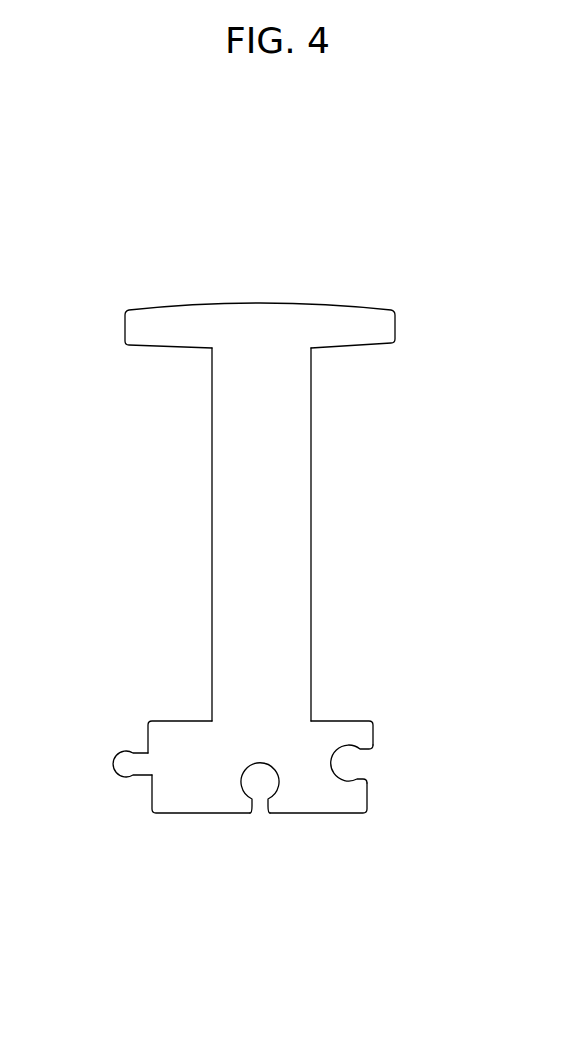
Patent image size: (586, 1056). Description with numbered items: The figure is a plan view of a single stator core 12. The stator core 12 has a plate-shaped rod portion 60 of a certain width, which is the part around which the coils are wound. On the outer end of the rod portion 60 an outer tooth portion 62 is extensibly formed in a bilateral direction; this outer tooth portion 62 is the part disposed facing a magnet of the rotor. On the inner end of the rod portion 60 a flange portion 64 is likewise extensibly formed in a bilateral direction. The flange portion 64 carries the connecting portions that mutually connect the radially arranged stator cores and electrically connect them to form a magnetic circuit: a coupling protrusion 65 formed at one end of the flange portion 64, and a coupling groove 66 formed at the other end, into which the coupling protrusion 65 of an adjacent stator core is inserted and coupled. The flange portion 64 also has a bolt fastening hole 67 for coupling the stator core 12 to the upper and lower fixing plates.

The stator core 12 is at (346, 252).
The rod portion 60 is at (280, 530).
The outer tooth portion 62 is at (372, 328).
The flange portion 64 is at (197, 772).
The coupling protrusion 65 is at (127, 770).
The coupling groove 66 is at (337, 757).
The bolt fastening hole 67 is at (258, 780).